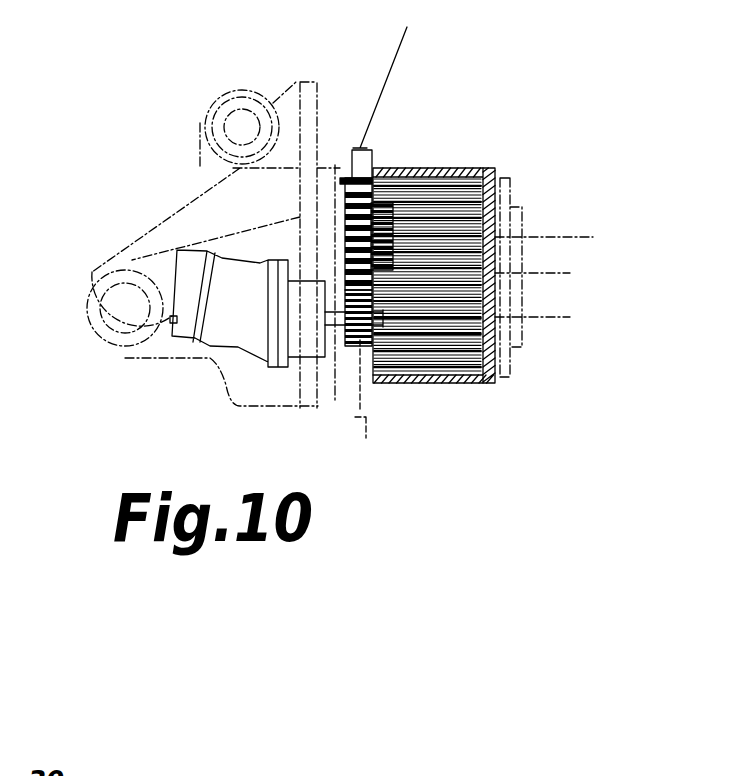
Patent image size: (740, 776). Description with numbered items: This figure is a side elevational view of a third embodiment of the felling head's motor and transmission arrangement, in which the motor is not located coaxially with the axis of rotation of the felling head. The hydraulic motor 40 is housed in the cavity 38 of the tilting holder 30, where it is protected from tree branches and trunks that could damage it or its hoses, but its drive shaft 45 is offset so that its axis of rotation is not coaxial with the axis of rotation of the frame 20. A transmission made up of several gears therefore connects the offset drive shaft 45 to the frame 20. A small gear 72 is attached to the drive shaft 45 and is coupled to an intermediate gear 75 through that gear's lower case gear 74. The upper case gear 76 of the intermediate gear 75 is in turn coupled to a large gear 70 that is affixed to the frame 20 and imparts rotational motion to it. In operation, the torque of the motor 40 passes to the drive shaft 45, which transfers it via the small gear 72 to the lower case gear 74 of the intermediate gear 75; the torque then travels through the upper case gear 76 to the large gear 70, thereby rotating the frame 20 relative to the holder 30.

The frame 20 is at (402, 43).
The tilting holder 30 is at (160, 217).
The cavity 38 is at (206, 373).
The hydraulic motor 40 is at (252, 315).
The drive shaft 45 is at (333, 300).
The large gear 70 is at (486, 172).
The small gear 72 is at (362, 346).
The lower case gear 74 is at (346, 185).
The intermediate gear 75 is at (367, 179).
The upper case gear 76 is at (381, 230).